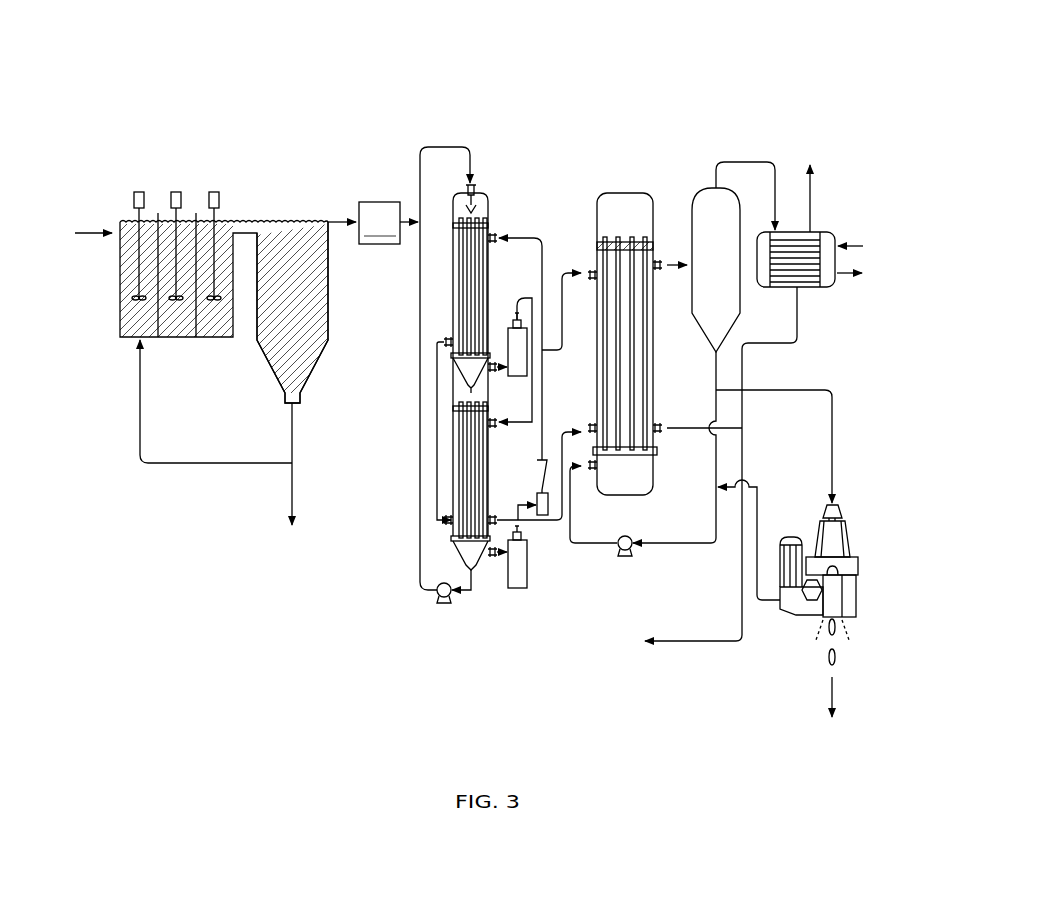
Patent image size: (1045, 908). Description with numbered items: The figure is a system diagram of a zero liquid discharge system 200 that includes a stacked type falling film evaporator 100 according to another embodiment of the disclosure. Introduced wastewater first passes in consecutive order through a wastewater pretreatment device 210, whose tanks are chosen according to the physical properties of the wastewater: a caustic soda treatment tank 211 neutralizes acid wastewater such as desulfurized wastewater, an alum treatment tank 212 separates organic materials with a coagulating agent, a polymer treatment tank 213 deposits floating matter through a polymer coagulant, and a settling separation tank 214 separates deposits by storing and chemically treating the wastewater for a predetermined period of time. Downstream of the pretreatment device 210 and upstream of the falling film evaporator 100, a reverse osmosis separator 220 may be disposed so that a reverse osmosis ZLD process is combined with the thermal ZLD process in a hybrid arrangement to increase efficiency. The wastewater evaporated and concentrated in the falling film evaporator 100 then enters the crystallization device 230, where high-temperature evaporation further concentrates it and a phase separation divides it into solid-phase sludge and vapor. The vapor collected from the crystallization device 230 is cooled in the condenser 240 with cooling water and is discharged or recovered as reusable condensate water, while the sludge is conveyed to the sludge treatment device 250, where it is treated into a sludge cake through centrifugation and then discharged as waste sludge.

The falling film evaporator 100 is at (483, 178).
The zero liquid discharge system 200 is at (692, 48).
The wastewater pretreatment device 210 is at (315, 90).
The caustic soda treatment tank 211 is at (138, 176).
The alum treatment tank 212 is at (175, 176).
The polymer treatment tank 213 is at (213, 176).
The settling separation tank 214 is at (288, 204).
The reverse osmosis separator 220 is at (373, 223).
The crystallization device 230 is at (648, 178).
The condenser 240 is at (822, 310).
The sludge treatment device 250 is at (853, 498).